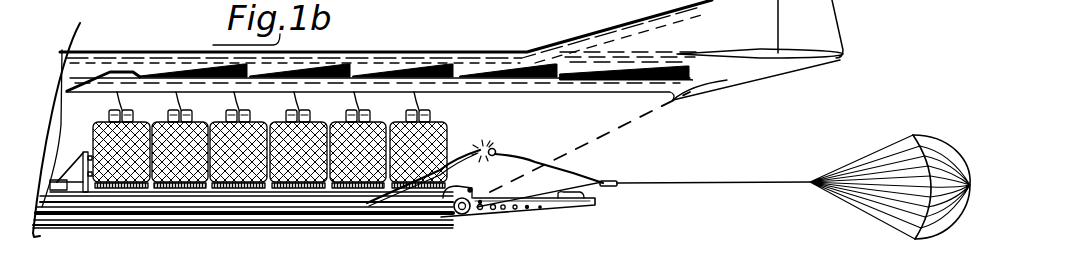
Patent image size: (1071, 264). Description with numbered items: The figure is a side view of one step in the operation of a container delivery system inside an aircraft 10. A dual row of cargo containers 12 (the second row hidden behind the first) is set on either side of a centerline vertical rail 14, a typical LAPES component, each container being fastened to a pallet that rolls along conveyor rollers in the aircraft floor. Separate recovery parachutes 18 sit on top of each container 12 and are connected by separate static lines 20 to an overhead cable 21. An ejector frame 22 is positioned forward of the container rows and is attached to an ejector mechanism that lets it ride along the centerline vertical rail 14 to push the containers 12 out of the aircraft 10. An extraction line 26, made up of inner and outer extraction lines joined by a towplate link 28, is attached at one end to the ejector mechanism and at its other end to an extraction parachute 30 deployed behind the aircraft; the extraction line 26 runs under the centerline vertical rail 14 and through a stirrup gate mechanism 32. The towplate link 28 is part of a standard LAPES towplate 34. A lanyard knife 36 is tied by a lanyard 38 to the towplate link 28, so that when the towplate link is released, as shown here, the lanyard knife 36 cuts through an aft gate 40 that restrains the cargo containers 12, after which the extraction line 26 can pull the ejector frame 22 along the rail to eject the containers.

The aircraft 10 is at (452, 50).
The cargo containers 12 is at (447, 128).
The centerline vertical rail 14 is at (100, 196).
The recovery parachutes 18 is at (430, 115).
The static lines 20 is at (407, 100).
The overhead cable 21 is at (543, 93).
The ejector frame 22 is at (57, 178).
The extraction line 26 is at (682, 182).
The towplate link 28 is at (603, 181).
The extraction parachute 30 is at (938, 134).
The stirrup gate mechanism 32 is at (434, 222).
The towplate 34 is at (587, 193).
The lanyard knife 36 is at (497, 152).
The lanyard 38 is at (534, 162).
The aft gate 40 is at (475, 151).